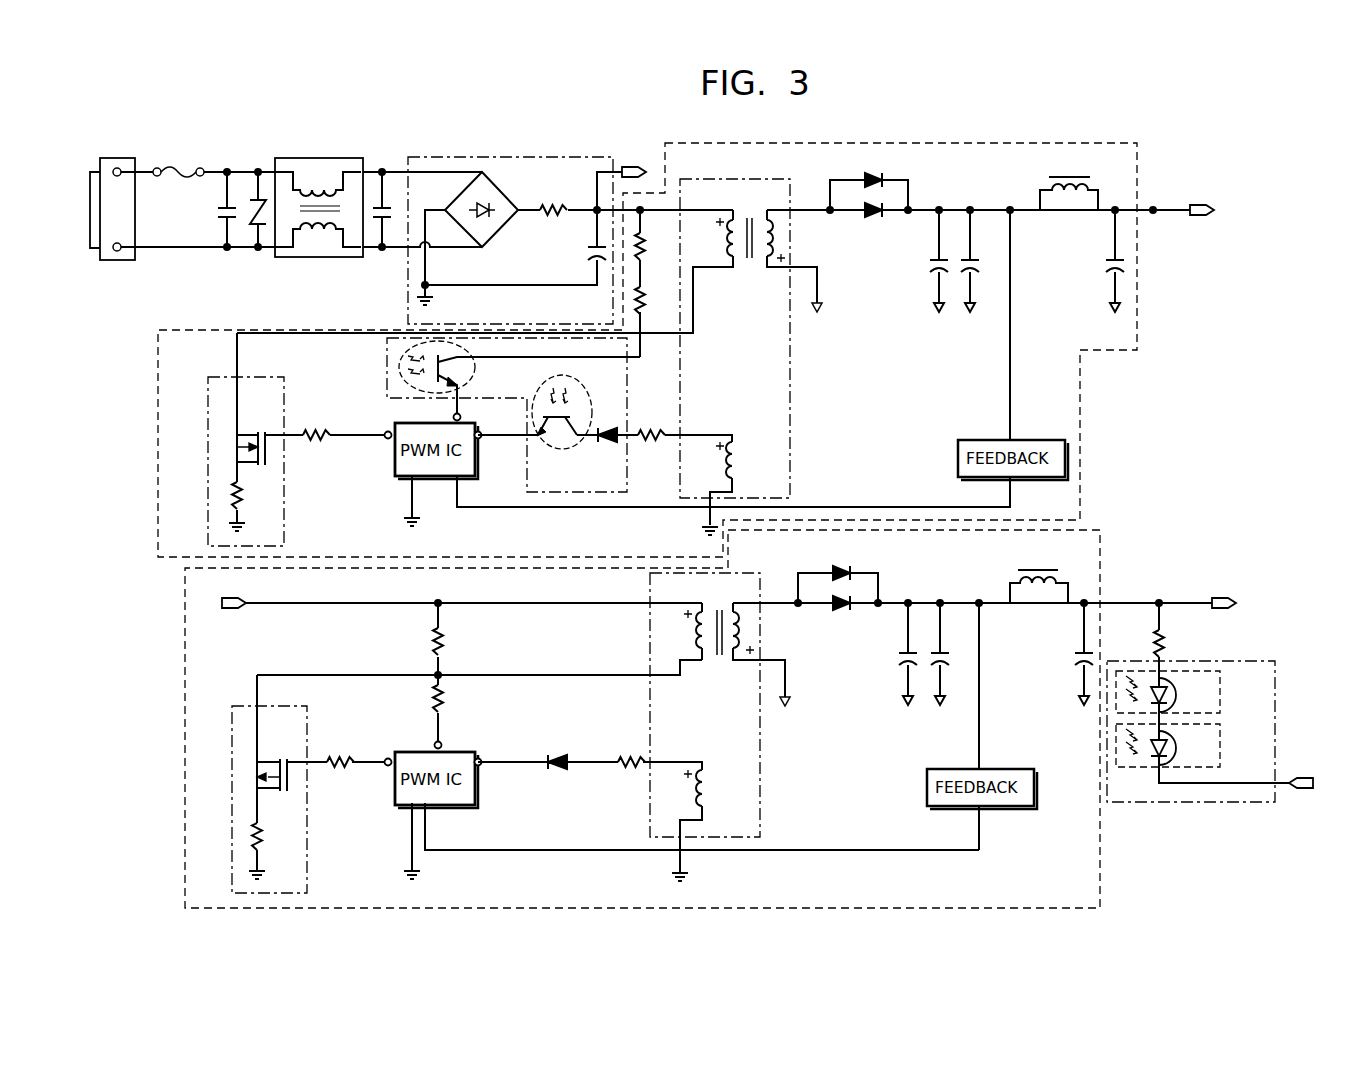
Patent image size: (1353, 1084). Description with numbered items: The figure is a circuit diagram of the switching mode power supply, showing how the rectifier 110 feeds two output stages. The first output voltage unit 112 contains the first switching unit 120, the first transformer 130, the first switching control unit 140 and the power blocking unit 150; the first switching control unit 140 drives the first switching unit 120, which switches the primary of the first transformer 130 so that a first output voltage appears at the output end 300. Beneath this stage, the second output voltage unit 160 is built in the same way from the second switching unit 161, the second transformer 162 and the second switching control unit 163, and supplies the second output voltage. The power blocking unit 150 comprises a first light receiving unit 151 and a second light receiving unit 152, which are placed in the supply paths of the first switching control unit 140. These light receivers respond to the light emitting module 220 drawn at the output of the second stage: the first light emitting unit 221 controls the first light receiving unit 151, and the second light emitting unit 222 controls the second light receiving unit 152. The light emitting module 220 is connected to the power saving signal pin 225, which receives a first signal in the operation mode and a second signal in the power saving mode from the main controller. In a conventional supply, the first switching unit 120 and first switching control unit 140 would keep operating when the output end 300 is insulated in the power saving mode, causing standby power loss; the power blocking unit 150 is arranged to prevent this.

The rectifier 110 is at (520, 156).
The first output voltage unit 112 is at (1080, 410).
The first switching unit 120 is at (218, 377).
The first transformer 130 is at (740, 179).
The first switching control unit 140 is at (399, 423).
The power blocking unit 150 is at (495, 415).
The first light receiving unit 151 is at (563, 450).
The second light receiving unit 152 is at (477, 371).
The second output voltage unit 160 is at (721, 702).
The second switching unit 161 is at (240, 706).
The second transformer 162 is at (735, 573).
The second switching control unit 163 is at (412, 752).
The light emitting module 220 is at (1215, 719).
The first light emitting unit 221 is at (1221, 678).
The second light emitting unit 222 is at (1221, 731).
The power saving signal pin 225 is at (1297, 780).
The output end 300 is at (1158, 205).